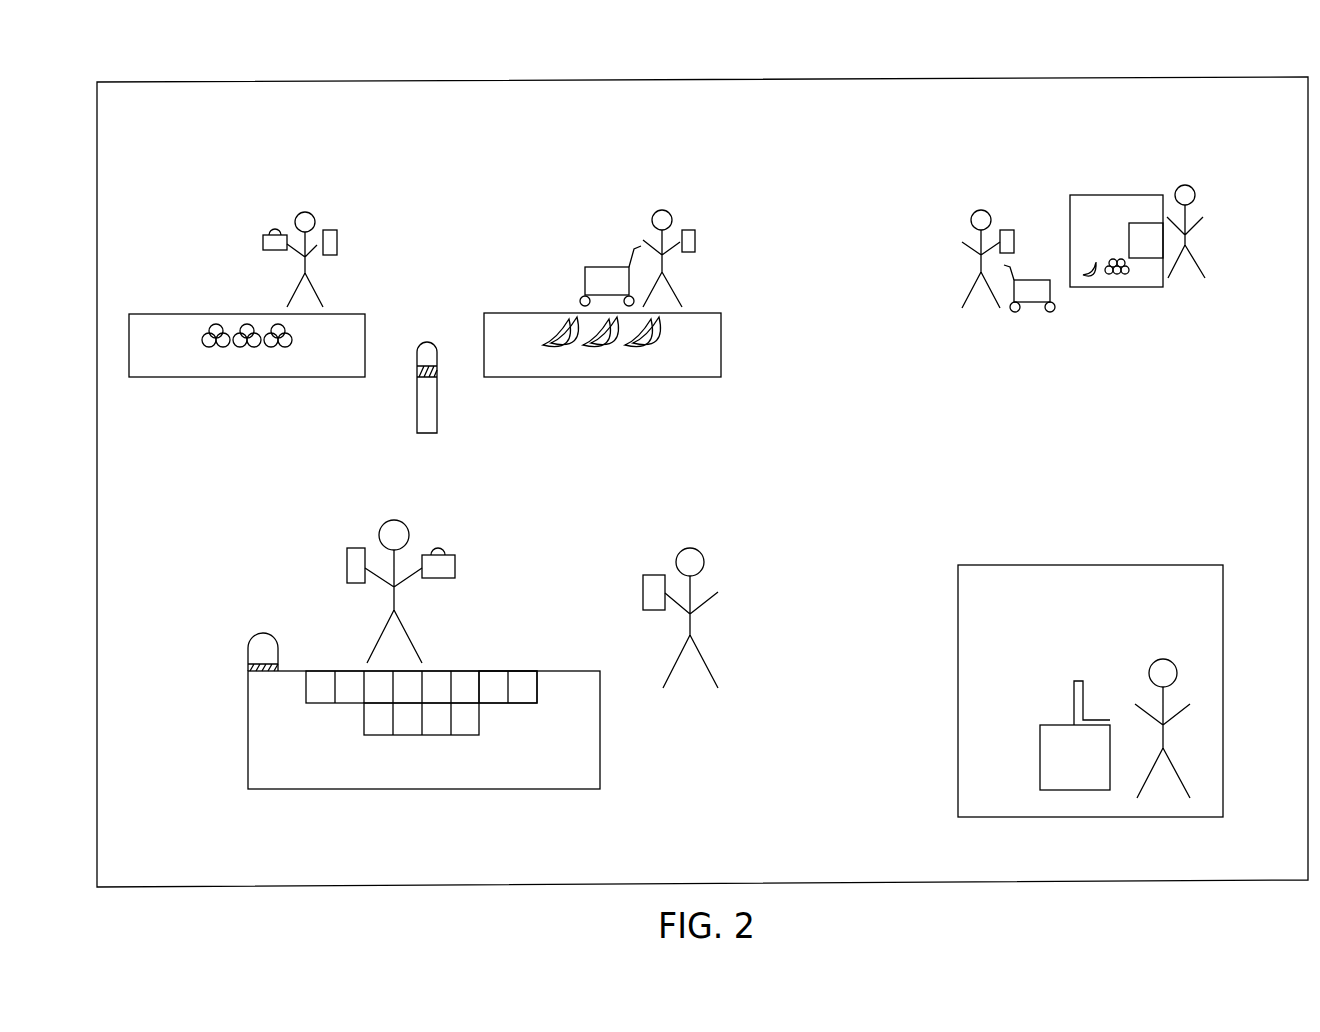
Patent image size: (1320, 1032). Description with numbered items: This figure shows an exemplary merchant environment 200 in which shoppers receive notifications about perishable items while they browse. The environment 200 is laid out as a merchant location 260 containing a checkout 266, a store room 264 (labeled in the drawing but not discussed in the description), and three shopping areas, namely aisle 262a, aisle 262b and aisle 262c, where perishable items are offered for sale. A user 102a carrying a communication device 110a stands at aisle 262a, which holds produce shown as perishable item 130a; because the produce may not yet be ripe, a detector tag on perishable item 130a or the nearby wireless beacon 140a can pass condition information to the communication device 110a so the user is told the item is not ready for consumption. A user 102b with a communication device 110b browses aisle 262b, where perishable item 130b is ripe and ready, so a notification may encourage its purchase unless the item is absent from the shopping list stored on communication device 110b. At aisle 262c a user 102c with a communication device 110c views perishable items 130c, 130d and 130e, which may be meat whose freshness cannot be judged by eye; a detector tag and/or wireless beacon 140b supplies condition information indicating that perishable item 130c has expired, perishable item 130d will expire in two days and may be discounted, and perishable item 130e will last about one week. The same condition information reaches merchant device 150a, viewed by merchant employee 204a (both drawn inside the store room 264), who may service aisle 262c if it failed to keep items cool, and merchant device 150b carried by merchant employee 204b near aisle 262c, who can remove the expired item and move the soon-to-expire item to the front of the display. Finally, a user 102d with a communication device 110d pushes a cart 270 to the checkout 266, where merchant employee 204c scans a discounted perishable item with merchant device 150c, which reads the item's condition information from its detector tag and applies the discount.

The environment 200 is at (1166, 68).
The merchant location 260 is at (823, 112).
The user 102a is at (303, 210).
The user 102b is at (662, 208).
The user 102c is at (394, 519).
The user 102d is at (981, 209).
The communication device 110a is at (329, 228).
The communication device 110b is at (698, 240).
The communication device 110c is at (356, 547).
The communication device 110d is at (1007, 229).
The perishable item 130a is at (285, 350).
The perishable item 130b is at (577, 352).
The perishable item 130c is at (320, 707).
The perishable item 130d is at (466, 738).
The perishable item 130e is at (525, 707).
The wireless beacon 140a is at (427, 341).
The wireless beacon 140b is at (262, 632).
The aisle 262a is at (167, 380).
The aisle 262b is at (679, 380).
The aisle 262c is at (274, 793).
The checkout 266 is at (1116, 193).
The cart 270 is at (1032, 310).
The merchant employee 204a is at (1163, 658).
The merchant employee 204b is at (690, 547).
The merchant employee 204c is at (1198, 196).
The merchant device 150a is at (1078, 680).
The merchant device 150b is at (652, 574).
The merchant device 150c is at (1146, 260).
The store room 264 is at (1173, 594).